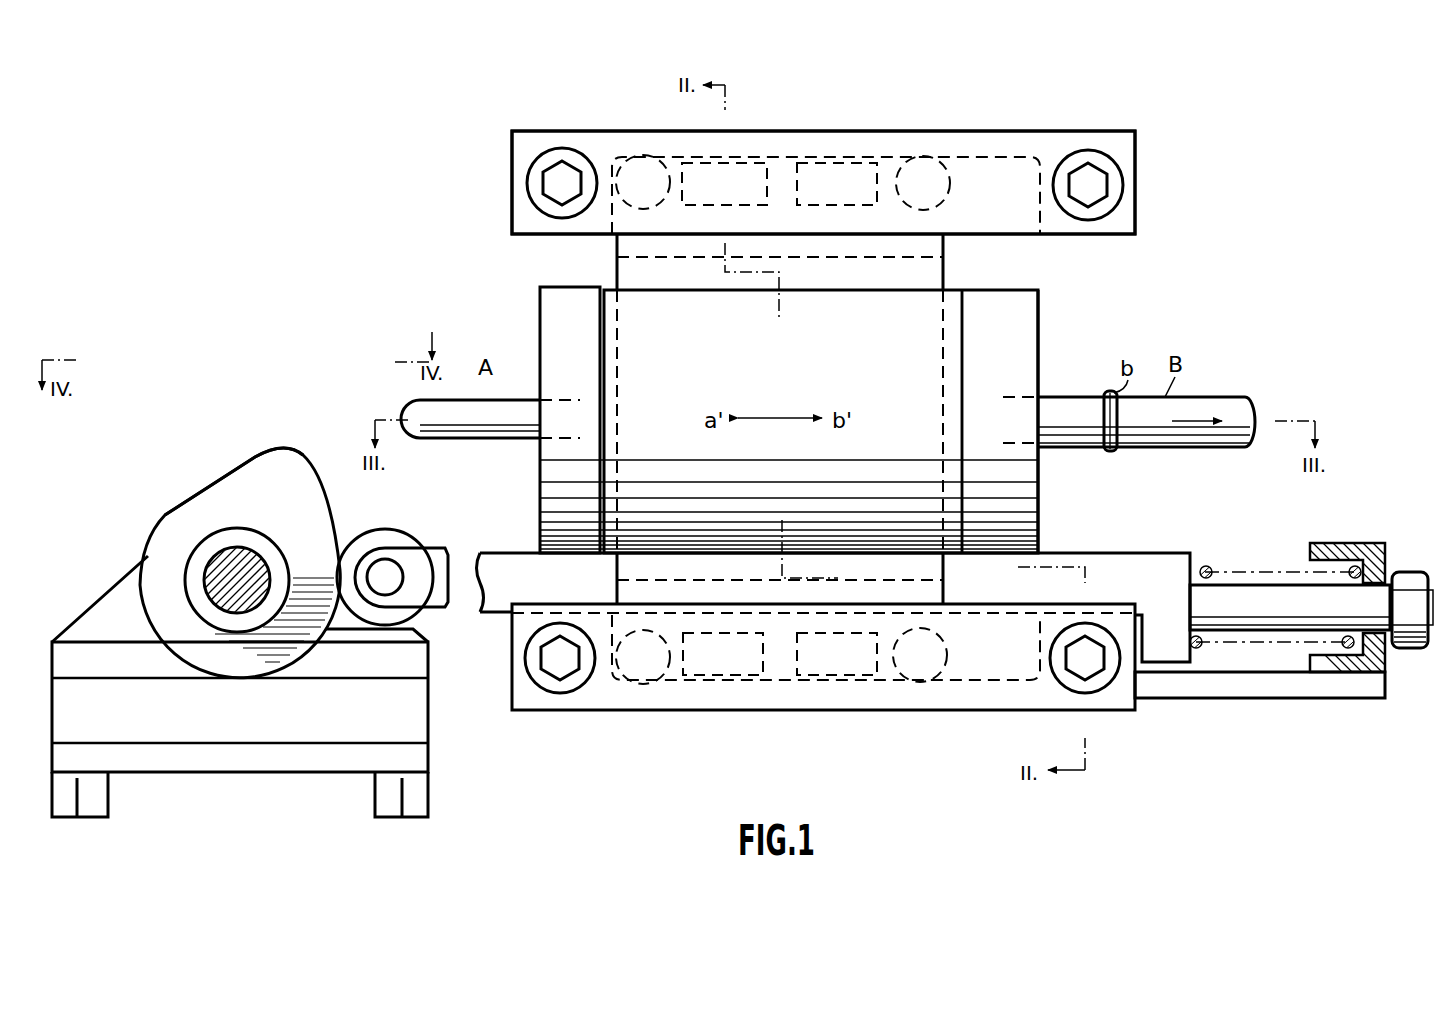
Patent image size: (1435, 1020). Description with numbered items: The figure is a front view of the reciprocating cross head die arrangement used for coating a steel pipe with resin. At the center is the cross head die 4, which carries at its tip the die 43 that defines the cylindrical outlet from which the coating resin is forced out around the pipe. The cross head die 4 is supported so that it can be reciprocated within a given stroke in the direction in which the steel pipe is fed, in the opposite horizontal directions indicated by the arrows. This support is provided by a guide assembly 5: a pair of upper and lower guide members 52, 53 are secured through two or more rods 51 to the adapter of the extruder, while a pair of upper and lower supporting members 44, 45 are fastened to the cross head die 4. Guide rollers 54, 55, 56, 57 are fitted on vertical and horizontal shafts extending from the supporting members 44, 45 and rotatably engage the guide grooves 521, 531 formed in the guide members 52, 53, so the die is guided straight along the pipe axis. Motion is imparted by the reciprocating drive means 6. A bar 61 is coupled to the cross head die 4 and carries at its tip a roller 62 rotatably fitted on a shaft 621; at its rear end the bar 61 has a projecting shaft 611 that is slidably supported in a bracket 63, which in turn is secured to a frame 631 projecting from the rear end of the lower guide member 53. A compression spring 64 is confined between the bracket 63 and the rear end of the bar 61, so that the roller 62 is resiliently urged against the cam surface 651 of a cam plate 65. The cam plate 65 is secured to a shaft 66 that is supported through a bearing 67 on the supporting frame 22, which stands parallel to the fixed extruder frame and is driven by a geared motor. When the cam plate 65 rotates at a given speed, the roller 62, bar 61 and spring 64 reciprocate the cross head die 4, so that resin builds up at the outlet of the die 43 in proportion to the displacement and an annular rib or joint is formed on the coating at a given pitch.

The cross head die 4 is at (923, 376).
The die 43 is at (1030, 338).
The upper supporting member 44 is at (860, 278).
The lower supporting member 45 is at (780, 578).
The guide assembly 5 is at (597, 130).
The rods 51 is at (527, 180).
The upper guide member 52 is at (1066, 131).
The guide groove 521 is at (1006, 167).
The lower guide member 53 is at (588, 694).
The guide groove 531 is at (983, 682).
The guide roller 54 is at (800, 682).
The guide roller 55 is at (666, 170).
The guide roller 56 is at (661, 684).
The guide roller 57 is at (800, 165).
The reciprocating drive means 6 is at (250, 610).
The bar 61 is at (497, 555).
The projecting shaft 611 is at (1252, 590).
The roller 62 is at (414, 538).
The shaft 621 is at (381, 560).
The bracket 63 is at (1328, 545).
The frame 631 is at (1240, 690).
The compression spring 64 is at (1207, 566).
The cam plate 65 is at (192, 498).
The cam surface 651 is at (246, 461).
The shaft 66 is at (232, 553).
The bearing 67 is at (112, 590).
The supporting frame 22 is at (260, 760).